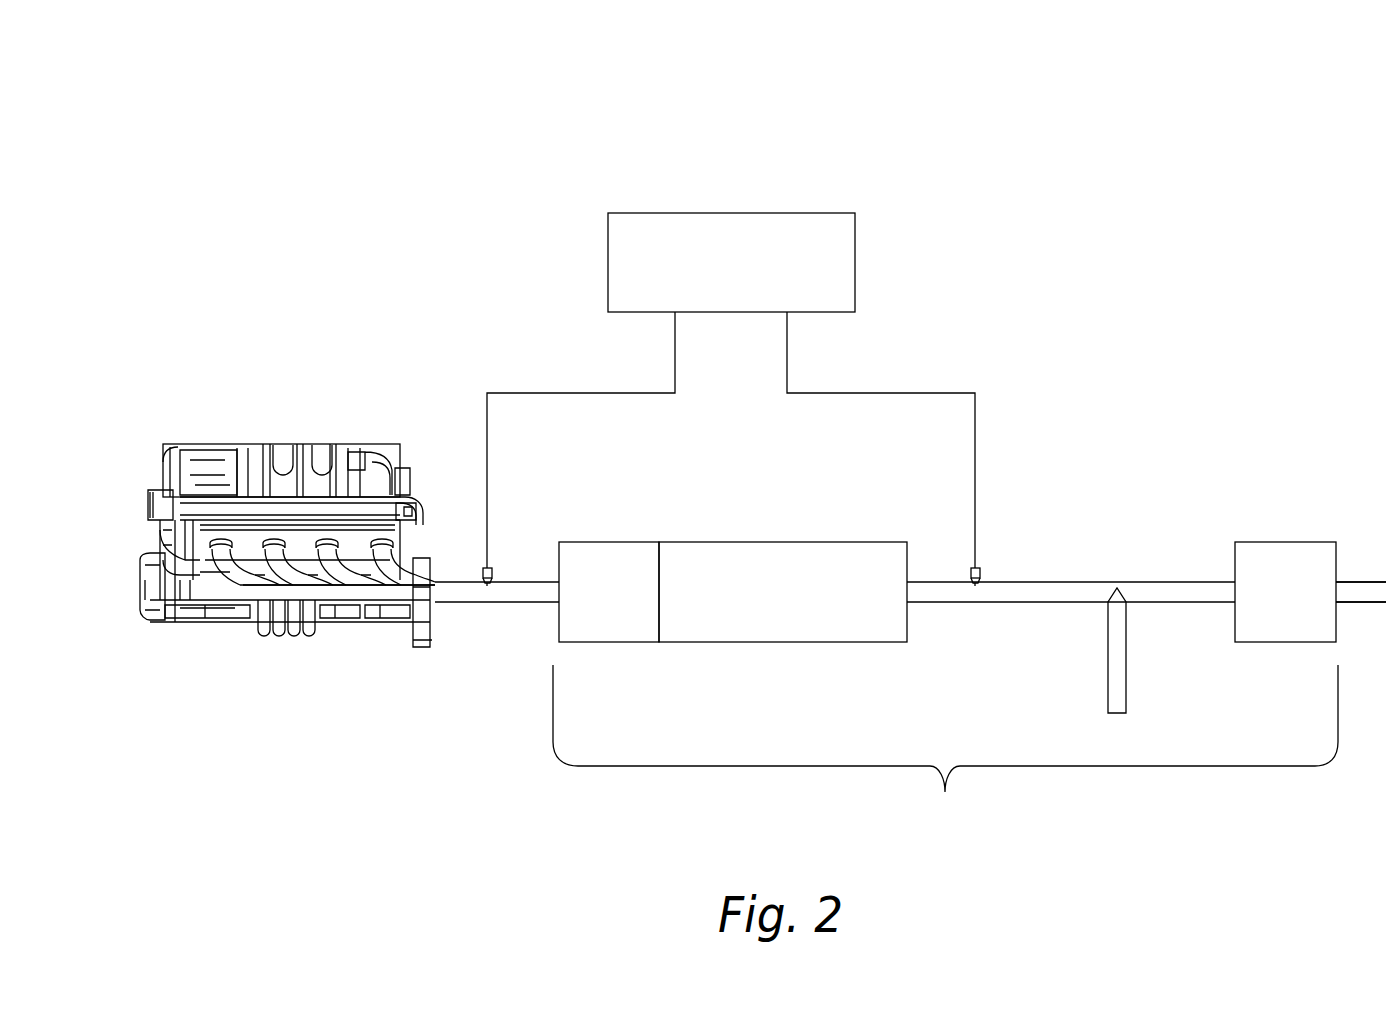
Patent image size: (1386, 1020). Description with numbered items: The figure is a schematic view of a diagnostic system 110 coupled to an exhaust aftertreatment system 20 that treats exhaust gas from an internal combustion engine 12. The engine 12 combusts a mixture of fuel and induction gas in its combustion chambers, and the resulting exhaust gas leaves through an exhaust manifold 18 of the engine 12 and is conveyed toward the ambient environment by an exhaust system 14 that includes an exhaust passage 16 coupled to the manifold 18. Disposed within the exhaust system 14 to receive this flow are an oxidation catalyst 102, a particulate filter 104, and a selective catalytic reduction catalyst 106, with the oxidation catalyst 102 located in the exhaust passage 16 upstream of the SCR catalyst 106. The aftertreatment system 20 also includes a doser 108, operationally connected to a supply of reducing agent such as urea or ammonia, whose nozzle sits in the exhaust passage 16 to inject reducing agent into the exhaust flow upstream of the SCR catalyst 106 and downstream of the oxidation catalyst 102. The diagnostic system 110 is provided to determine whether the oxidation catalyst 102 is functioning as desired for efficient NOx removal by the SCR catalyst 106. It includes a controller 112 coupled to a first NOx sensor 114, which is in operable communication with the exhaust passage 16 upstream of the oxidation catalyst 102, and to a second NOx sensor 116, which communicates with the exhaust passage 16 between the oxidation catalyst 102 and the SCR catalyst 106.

The internal combustion engine 12 is at (250, 430).
The exhaust system 14 is at (1100, 528).
The exhaust passage 16 is at (1357, 580).
The exhaust manifold 18 is at (248, 547).
The exhaust aftertreatment system 20 is at (945, 749).
The oxidation catalyst 102 is at (608, 542).
The particulate filter 104 is at (815, 542).
The selective catalytic reduction (SCR) catalyst 106 is at (1297, 643).
The doser 108 is at (1108, 663).
The diagnostic system 110 is at (636, 163).
The controller 112 is at (858, 246).
The first NOx sensor 114 is at (484, 568).
The second NOx sensor 116 is at (980, 568).